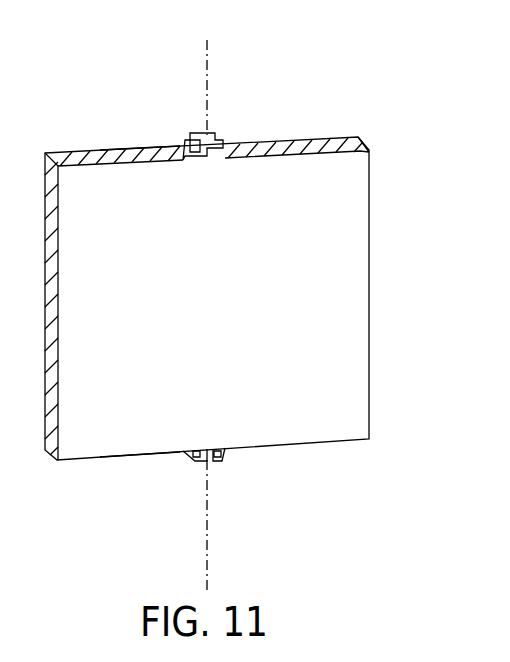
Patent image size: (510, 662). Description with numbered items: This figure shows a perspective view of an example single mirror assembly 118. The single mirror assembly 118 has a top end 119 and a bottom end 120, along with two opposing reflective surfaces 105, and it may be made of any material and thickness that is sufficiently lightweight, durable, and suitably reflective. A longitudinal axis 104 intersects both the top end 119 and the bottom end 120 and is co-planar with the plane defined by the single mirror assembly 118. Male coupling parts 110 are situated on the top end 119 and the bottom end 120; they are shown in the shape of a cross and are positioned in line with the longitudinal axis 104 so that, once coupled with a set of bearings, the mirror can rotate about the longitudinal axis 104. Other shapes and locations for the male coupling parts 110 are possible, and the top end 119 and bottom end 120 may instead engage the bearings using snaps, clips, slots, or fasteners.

The longitudinal axis 104 is at (208, 62).
The reflective surface 105 is at (370, 297).
The male coupling part 110 is at (222, 135).
The single mirror assembly 118 is at (385, 68).
The top end 119 is at (122, 148).
The bottom end 120 is at (130, 456).